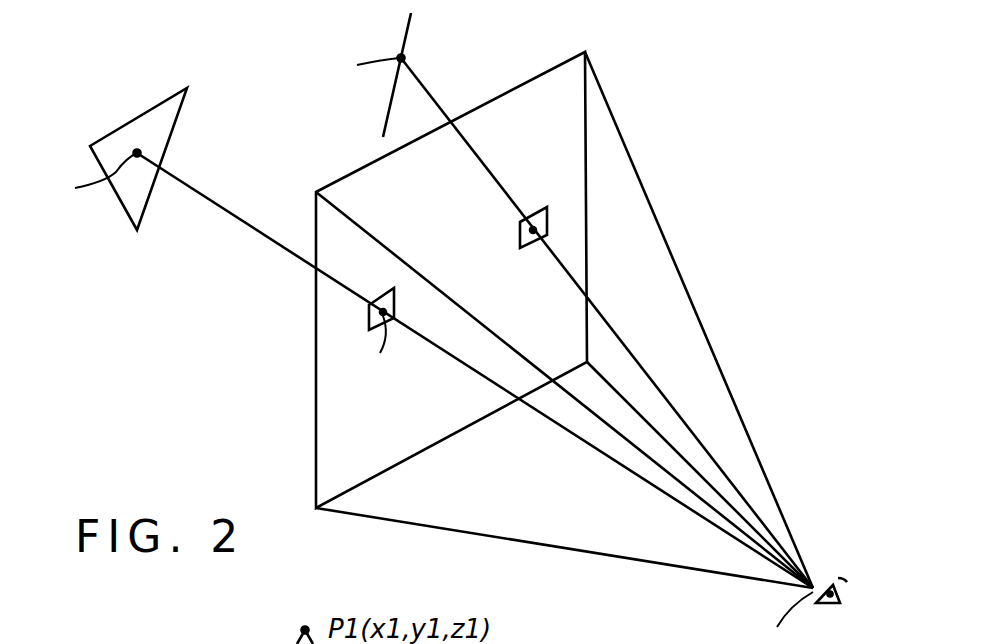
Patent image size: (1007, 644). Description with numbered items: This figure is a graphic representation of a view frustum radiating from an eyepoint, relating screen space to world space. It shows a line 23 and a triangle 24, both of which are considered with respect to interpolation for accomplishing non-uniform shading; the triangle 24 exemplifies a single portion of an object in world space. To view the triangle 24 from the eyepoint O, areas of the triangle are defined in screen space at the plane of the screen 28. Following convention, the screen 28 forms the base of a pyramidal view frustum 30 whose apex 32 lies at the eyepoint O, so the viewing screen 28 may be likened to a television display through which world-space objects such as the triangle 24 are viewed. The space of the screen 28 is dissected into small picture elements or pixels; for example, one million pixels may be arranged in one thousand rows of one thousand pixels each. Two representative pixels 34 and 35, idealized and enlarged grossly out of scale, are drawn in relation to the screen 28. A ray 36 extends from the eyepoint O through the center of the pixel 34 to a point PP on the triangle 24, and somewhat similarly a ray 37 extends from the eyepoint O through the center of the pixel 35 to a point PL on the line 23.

The line 23 is at (421, 33).
The triangle 24 is at (136, 113).
The screen 28 is at (313, 435).
The pyramidal view frustum 30 is at (618, 309).
The apex 32 is at (800, 570).
The pixel 34 is at (366, 312).
The pixel 35 is at (536, 204).
The ray 36 is at (246, 232).
The ray 37 is at (443, 104).